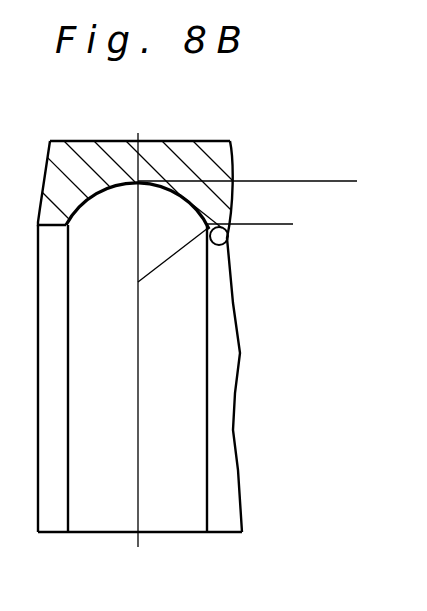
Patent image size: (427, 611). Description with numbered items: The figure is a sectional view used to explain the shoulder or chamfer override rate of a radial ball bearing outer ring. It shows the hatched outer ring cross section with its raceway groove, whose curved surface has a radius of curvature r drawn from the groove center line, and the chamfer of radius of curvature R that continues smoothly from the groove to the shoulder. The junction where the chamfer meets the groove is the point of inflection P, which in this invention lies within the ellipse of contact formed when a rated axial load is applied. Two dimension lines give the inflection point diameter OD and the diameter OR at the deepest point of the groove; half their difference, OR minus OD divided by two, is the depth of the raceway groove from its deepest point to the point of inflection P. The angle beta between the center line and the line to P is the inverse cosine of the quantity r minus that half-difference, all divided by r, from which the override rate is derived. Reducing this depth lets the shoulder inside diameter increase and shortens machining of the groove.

The radius of curvature of the raceway groove r is at (88, 201).
The point of inflection P is at (207, 230).
The radius of curvature of the chamfer R is at (227, 229).
The inflection point diameter OD is at (290, 224).
The outer ring raceway groove diameter OR is at (348, 181).